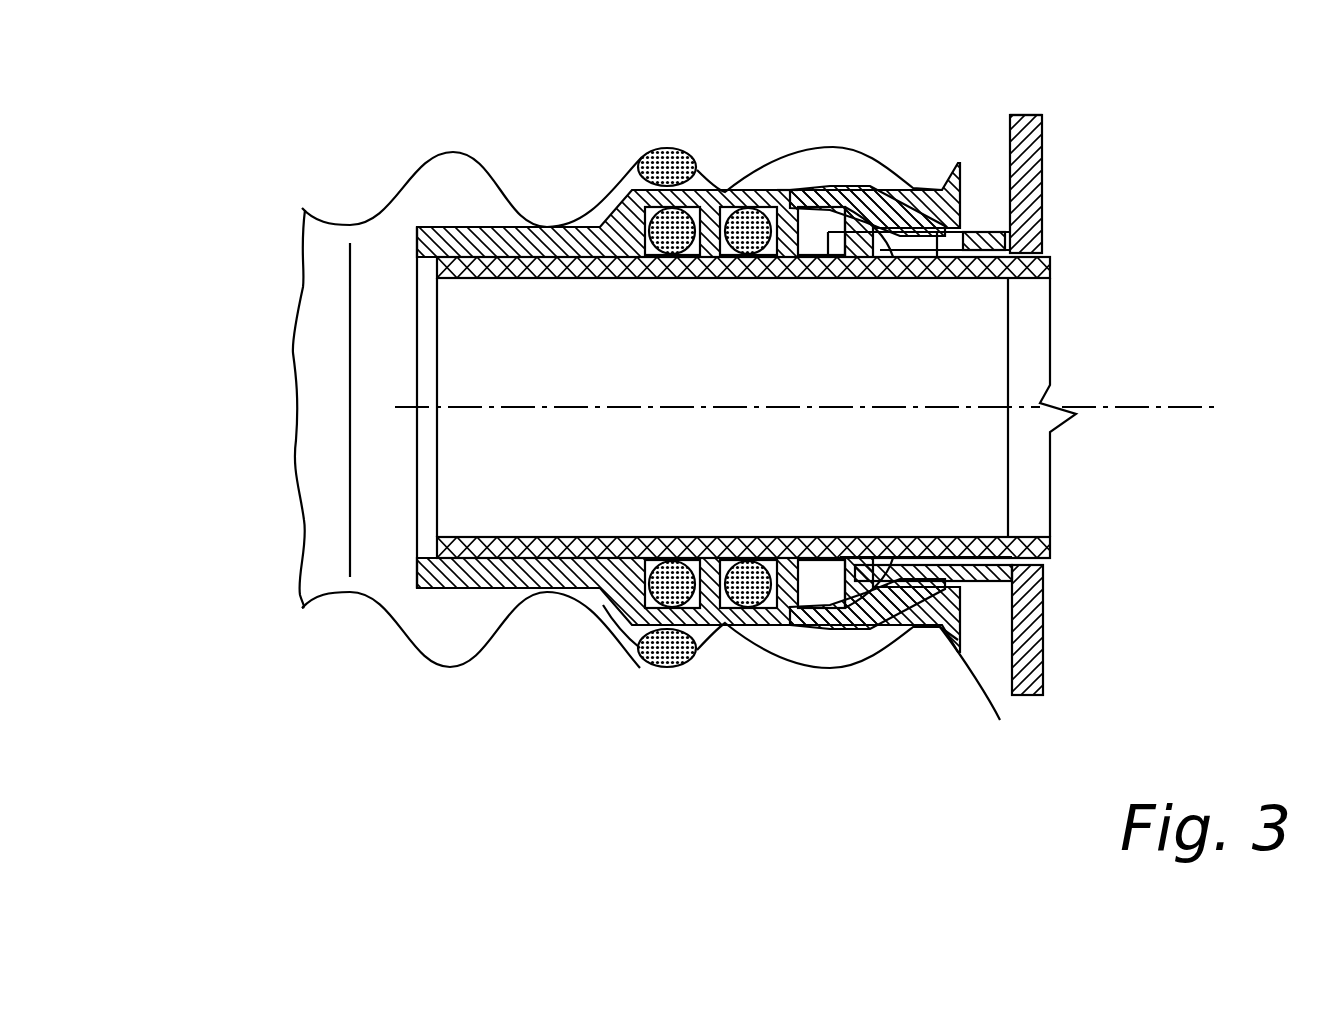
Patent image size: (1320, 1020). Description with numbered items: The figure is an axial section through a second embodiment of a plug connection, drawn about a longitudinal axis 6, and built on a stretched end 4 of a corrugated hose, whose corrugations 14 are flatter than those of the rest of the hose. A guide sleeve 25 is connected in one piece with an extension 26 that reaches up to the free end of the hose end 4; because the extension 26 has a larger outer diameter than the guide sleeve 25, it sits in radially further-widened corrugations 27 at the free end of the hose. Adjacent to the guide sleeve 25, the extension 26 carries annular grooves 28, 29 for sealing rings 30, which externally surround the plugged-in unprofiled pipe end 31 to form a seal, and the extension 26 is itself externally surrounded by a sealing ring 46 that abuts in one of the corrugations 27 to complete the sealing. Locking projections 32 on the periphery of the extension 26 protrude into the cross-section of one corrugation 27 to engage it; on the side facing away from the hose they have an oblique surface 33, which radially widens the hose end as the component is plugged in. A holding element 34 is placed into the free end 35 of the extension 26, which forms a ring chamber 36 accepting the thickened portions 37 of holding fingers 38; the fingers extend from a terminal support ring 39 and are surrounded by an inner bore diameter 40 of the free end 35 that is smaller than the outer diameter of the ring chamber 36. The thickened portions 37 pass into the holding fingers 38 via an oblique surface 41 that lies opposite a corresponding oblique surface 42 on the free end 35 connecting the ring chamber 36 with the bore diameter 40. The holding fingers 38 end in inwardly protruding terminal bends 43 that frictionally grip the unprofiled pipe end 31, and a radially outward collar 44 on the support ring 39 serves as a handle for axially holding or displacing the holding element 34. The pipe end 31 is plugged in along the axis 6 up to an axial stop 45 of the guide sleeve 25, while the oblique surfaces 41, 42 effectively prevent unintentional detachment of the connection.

The stretched hose end 4 is at (332, 477).
The longitudinal axis 6 is at (1173, 404).
The corrugations 14 is at (468, 150).
The guide sleeve 25 is at (500, 590).
The extension 26 is at (772, 190).
The radially further-widened corrugations 27 is at (630, 650).
The annular groove 28 is at (625, 193).
The annular groove 29 is at (735, 193).
The sealing rings 30 is at (755, 627).
The unprofiled pipe end 31 is at (1053, 538).
The locking projections 32 is at (866, 176).
The oblique surface 33 is at (847, 640).
The holding element 34 is at (1088, 200).
The free end 35 is at (945, 183).
The ring chamber 36 is at (832, 206).
The thickened portions 37 is at (845, 630).
The holding fingers 38 is at (937, 258).
The support ring 39 is at (1008, 280).
The inner bore diameter 40 is at (958, 640).
The oblique surface 41 is at (893, 238).
The oblique surface 42 is at (922, 186).
The terminal bends 43 is at (840, 226).
The collar 44 is at (1028, 695).
The axial stop 45 is at (416, 574).
The sealing ring 46 is at (683, 667).